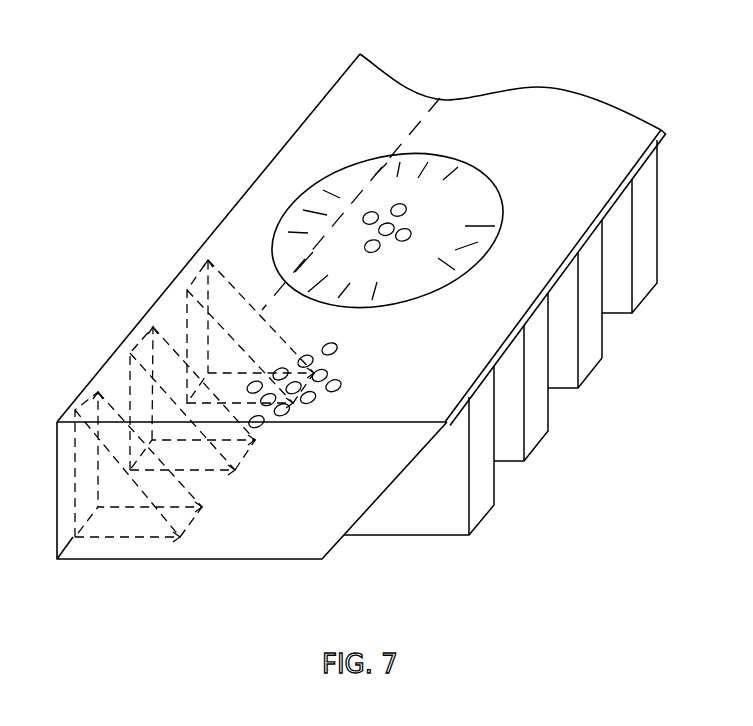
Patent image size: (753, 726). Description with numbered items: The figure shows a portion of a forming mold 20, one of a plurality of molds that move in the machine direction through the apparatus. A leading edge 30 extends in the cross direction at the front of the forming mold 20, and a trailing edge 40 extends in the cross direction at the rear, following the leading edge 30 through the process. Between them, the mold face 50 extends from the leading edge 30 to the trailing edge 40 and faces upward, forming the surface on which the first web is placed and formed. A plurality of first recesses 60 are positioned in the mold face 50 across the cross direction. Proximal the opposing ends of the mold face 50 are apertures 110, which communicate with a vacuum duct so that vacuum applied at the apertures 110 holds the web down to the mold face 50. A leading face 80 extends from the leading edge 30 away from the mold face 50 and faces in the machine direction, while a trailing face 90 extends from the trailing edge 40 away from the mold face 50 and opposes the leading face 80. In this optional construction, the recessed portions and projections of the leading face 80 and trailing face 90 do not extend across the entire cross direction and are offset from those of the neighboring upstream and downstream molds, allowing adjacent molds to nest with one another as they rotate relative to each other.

The forming mold 20 is at (374, 92).
The leading edge 30 is at (248, 192).
The mold face 50 is at (524, 120).
The first recesses 60 is at (506, 197).
The trailing edge 40 is at (556, 268).
The leading face 80 is at (224, 304).
The apertures 110 is at (338, 398).
The trailing face 90 is at (400, 475).